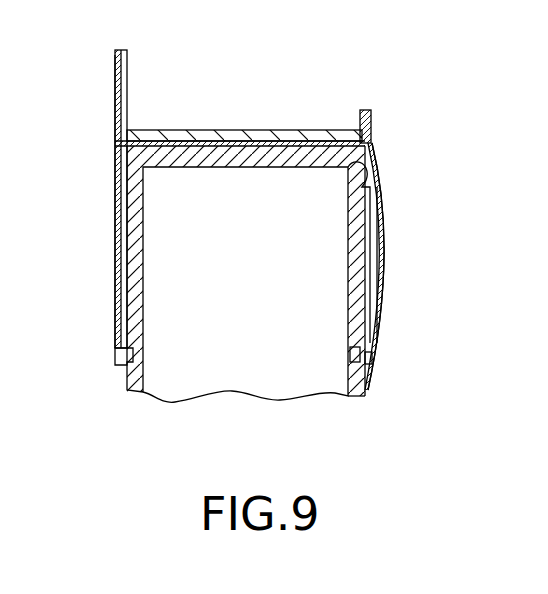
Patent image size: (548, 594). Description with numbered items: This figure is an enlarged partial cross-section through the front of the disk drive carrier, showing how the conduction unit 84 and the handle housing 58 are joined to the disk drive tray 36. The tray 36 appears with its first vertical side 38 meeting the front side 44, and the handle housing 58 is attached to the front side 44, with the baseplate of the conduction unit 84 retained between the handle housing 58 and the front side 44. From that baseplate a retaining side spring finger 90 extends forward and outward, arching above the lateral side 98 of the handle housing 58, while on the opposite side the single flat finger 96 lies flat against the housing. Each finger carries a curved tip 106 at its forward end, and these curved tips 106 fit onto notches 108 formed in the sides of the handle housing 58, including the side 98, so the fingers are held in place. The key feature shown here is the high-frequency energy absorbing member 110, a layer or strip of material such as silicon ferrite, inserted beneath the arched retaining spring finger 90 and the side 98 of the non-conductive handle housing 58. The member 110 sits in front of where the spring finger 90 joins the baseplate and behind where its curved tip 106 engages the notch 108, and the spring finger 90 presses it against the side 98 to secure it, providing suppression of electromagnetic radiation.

The disk drive tray 36 is at (130, 82).
The first vertical side 38 is at (115, 60).
The front side 44 is at (230, 128).
The handle housing 58 is at (131, 384).
The conduction unit 84 is at (388, 163).
The retaining side spring fingers 90 is at (392, 283).
The flat finger 96 is at (118, 247).
The side of handle housing 98 is at (362, 172).
The curved tips 106 is at (130, 355).
The notches 108 is at (368, 364).
The high-frequency energy absorbing member 110 is at (392, 243).